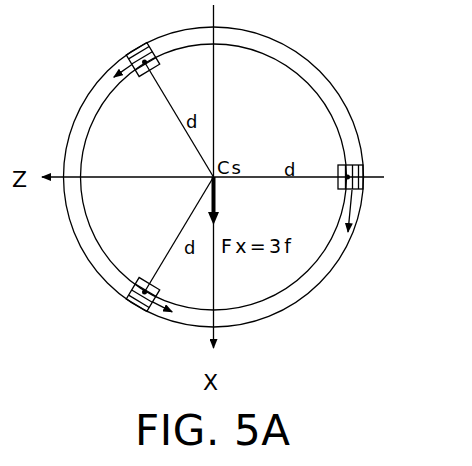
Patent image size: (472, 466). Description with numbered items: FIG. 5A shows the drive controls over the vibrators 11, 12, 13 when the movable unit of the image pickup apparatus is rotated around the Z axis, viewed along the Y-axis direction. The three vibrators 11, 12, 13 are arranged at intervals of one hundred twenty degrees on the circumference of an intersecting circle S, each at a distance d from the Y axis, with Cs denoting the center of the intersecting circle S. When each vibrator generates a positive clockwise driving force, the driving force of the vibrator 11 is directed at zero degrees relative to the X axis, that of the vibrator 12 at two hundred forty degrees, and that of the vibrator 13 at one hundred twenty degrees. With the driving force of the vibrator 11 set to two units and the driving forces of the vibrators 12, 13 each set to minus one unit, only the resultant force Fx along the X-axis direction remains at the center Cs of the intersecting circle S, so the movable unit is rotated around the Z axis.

The vibrator 11 is at (364, 190).
The vibrator 12 is at (135, 297).
The vibrator 13 is at (135, 55).
The intersecting circle S is at (306, 273).